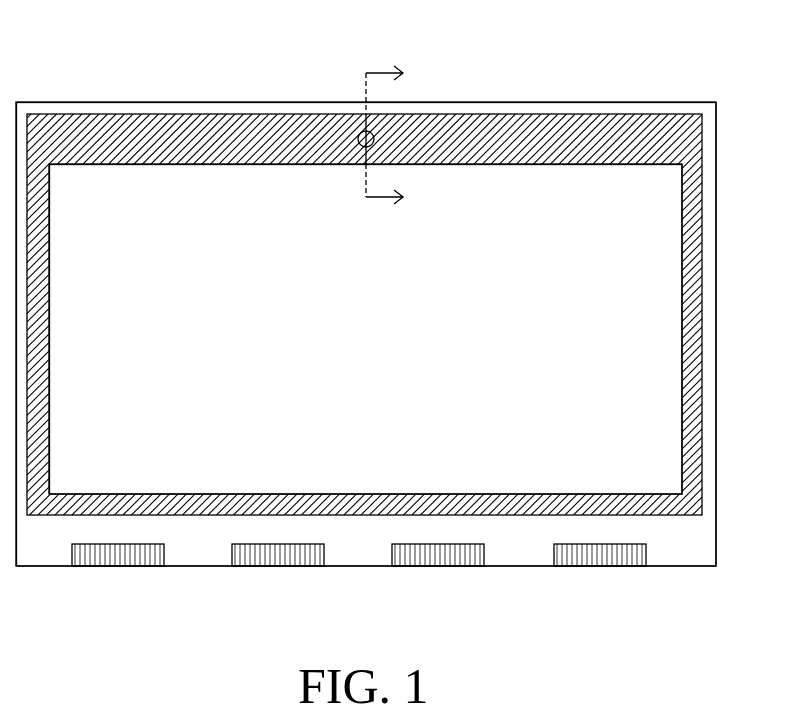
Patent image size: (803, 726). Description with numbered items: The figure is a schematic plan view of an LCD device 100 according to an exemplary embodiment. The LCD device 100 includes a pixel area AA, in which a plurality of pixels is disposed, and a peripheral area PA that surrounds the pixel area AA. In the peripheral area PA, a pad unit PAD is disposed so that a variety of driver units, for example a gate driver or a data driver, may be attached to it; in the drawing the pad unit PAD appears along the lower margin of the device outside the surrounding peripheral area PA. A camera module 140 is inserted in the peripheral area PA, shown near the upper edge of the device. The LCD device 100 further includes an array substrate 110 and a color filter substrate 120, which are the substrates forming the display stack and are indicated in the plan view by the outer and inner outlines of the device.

The LCD device 100 is at (702, 42).
The array substrate 110 is at (716, 153).
The color filter substrate 120 is at (702, 182).
The camera module 140 is at (358, 139).
The peripheral area PA is at (693, 235).
The pixel area AA is at (657, 282).
The pad unit PAD is at (618, 556).